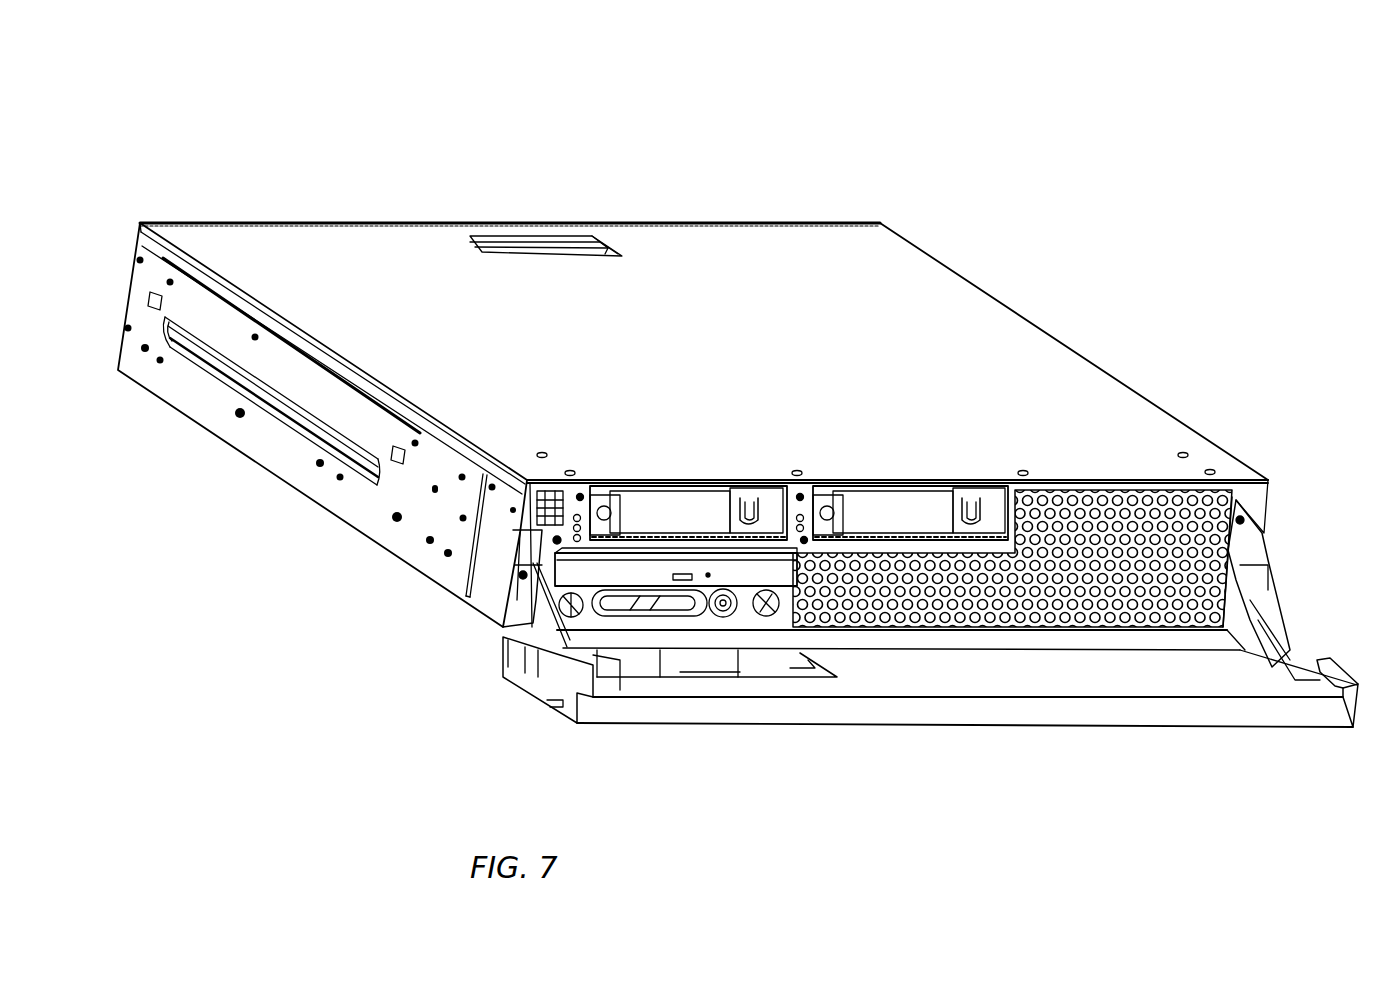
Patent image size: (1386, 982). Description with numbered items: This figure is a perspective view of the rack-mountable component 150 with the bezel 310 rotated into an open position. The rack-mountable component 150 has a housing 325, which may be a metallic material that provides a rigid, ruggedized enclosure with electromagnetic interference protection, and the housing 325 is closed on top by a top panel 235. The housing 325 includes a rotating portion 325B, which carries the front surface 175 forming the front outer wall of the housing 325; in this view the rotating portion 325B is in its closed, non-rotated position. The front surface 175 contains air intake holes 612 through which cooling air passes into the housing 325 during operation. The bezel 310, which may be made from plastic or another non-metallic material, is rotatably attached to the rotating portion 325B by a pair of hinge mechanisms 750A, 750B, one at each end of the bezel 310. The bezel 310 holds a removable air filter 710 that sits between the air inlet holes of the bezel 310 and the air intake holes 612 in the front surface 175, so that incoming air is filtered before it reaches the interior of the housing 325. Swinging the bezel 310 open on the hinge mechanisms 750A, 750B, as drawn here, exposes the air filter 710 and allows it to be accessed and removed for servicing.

The rack-mountable component 150 is at (327, 130).
The top panel 235 is at (825, 327).
The air intake holes 612 is at (1090, 493).
The front surface 175 is at (1268, 497).
The hinge mechanism 750B is at (1275, 595).
The hinge mechanism 750A is at (525, 565).
The housing 325 is at (200, 393).
The rotating portion 325B is at (487, 575).
The removable air filter 710 is at (998, 663).
The bezel 310 is at (1183, 710).